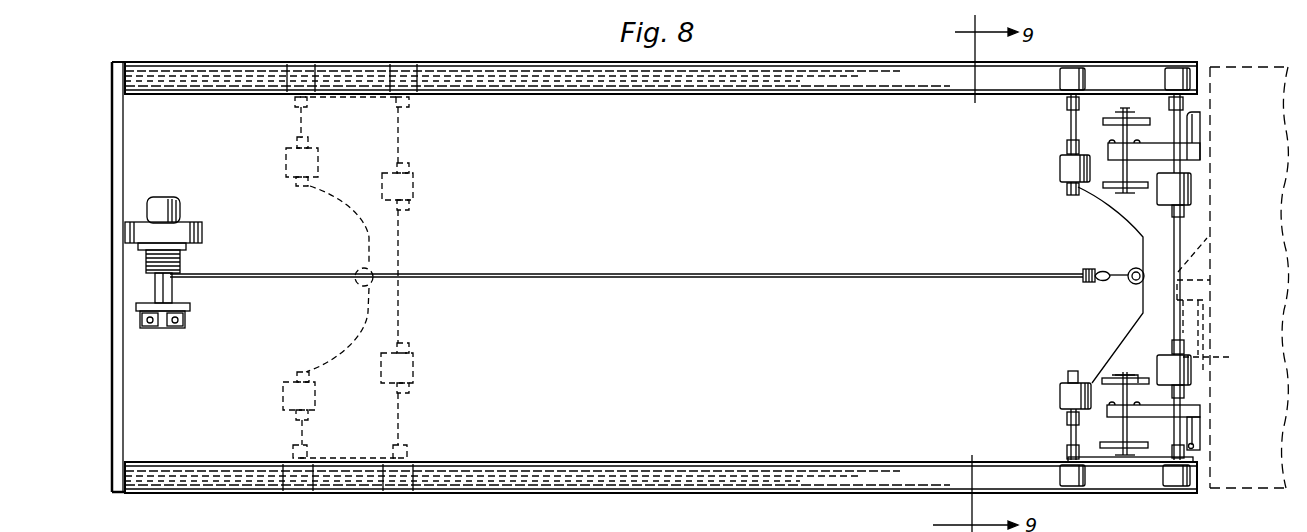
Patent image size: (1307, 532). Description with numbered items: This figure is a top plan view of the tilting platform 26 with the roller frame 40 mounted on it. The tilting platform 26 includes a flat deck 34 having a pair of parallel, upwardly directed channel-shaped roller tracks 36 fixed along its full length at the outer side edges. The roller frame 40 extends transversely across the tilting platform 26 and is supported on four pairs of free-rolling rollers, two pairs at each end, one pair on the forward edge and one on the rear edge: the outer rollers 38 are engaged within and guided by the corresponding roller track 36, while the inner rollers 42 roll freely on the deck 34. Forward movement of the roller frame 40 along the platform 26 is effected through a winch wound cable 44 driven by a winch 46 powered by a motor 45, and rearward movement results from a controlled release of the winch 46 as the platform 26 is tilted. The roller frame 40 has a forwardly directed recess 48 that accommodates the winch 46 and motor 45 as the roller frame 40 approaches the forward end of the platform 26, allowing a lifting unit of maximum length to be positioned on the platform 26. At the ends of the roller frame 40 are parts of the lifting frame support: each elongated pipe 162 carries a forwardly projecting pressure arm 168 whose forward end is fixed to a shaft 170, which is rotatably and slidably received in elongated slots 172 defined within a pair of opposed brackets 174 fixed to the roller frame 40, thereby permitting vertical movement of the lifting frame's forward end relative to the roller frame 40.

The tilting platform 26 is at (594, 495).
The flat deck 34 is at (810, 403).
The roller tracks 36 is at (560, 80).
The outer rollers 38 is at (415, 76).
The roller frame 40 is at (408, 238).
The inner rollers 42 is at (413, 185).
The winch wound cable 44 is at (795, 278).
The motor 45 is at (160, 205).
The winch 46 is at (175, 291).
The forwardly directed recess 48 is at (1142, 307).
The elongated pipe 162 is at (1200, 126).
The pressure arm 168 is at (1200, 150).
The shaft 170 is at (1108, 378).
The elongated slots 172 is at (1112, 442).
The brackets 174 is at (1140, 377).